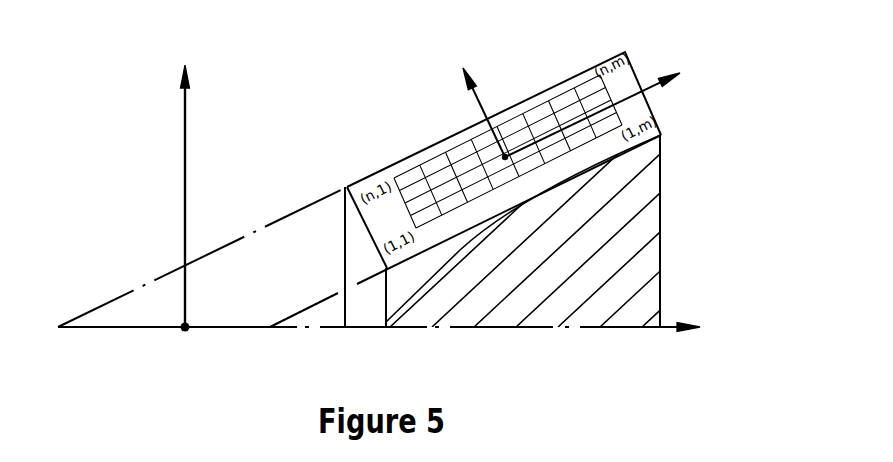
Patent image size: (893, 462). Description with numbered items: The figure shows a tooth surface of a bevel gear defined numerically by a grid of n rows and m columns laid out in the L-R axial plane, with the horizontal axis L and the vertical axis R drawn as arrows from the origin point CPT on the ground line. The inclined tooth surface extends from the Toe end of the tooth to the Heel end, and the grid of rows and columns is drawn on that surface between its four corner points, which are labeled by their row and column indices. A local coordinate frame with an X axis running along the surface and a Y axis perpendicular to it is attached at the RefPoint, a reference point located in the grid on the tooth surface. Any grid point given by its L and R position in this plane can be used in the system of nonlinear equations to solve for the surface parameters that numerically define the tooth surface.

The R axis R is at (185, 183).
The L axis L is at (688, 313).
The center point (CPT) on ground line CPT is at (185, 341).
The X axis of face coordinate system X is at (592, 105).
The Y axis of face coordinate system Y is at (476, 100).
The reference point on club face RefPoint is at (505, 157).
The toe of club head Toe is at (322, 231).
The heel of club head Heel is at (701, 128).